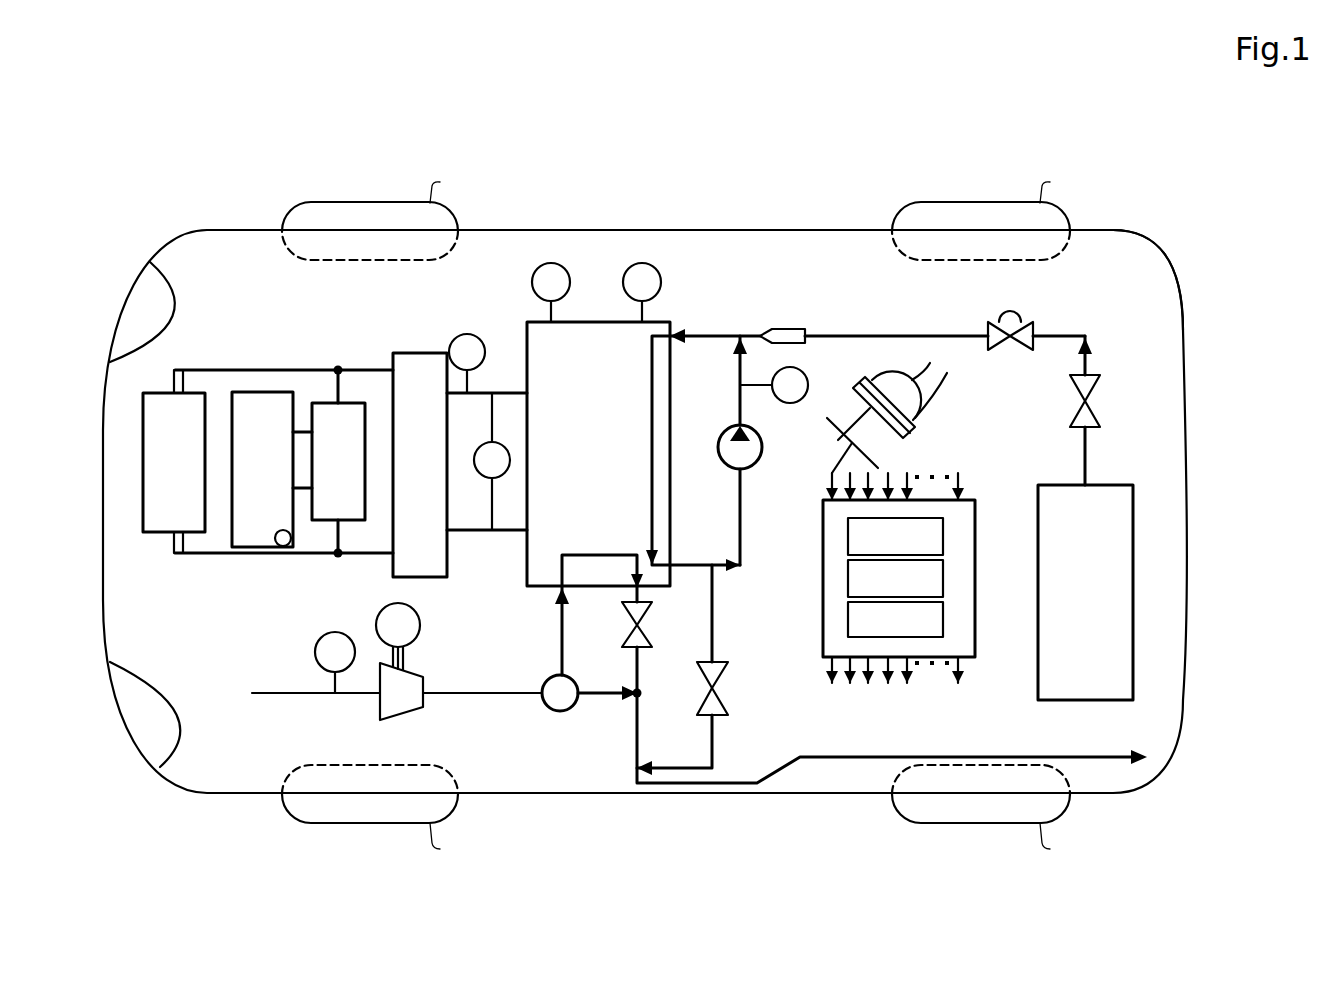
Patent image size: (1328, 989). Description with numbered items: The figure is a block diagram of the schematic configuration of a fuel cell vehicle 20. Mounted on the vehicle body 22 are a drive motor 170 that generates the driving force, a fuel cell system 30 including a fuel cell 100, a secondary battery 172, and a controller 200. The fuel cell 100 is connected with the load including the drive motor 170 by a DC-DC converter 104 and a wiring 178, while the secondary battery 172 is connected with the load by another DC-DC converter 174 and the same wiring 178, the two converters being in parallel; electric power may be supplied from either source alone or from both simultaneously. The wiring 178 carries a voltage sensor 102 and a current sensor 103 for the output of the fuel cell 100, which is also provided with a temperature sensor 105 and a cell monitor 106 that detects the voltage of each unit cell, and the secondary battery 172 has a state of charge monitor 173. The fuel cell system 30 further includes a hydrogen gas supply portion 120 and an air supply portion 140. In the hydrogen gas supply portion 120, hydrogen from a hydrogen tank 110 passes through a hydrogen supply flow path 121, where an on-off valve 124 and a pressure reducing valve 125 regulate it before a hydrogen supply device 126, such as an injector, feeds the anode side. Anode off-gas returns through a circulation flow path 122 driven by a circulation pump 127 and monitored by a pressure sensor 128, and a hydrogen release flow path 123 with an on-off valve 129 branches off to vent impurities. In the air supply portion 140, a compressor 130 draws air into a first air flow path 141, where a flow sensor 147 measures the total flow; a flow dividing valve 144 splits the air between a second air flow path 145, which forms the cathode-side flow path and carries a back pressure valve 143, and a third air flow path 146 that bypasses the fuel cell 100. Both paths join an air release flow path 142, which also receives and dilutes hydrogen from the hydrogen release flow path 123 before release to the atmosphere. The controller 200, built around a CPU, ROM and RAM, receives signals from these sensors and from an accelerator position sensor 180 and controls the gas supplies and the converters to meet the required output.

The fuel cell vehicle 20 is at (718, 193).
The vehicle body 22 is at (638, 230).
The fuel cell system 30 is at (656, 414).
The fuel cell 100 is at (672, 322).
The voltage sensor 102 is at (503, 445).
The current sensor 103 is at (464, 335).
The DC-DC converter 104 is at (420, 353).
The temperature sensor 105 is at (560, 265).
The cell monitor 106 is at (650, 265).
The hydrogen tank 110 is at (1103, 485).
The hydrogen gas supply portion 120 is at (1153, 297).
The hydrogen supply flow path 121 is at (830, 336).
The circulation flow path 122 is at (740, 545).
The hydrogen release flow path 123 is at (713, 655).
The on-off valve 124 is at (1078, 408).
The pressure reducing valve 125 is at (1036, 326).
The hydrogen supply device 126 is at (793, 328).
The circulation pump 127 is at (748, 468).
The pressure sensor 128 is at (776, 398).
The on-off valve 129 is at (730, 700).
The compressor 130 is at (377, 712).
The air supply portion 140 is at (401, 688).
The first air flow path 141 is at (288, 690).
The air release flow path 142 is at (820, 757).
The back pressure valve 143 is at (645, 627).
The flow dividing valve 144 is at (555, 711).
The second air flow path 145 is at (560, 652).
The third air flow path 146 is at (600, 698).
The flow sensor 147 is at (317, 695).
The drive motor 170 is at (181, 372).
The secondary battery 172 is at (243, 392).
The state of charge monitor 173 is at (290, 545).
The DC-DC converter 174 is at (323, 402).
The wiring 178 is at (195, 556).
The accelerator position sensor 180 is at (853, 380).
The controller 200 is at (975, 500).